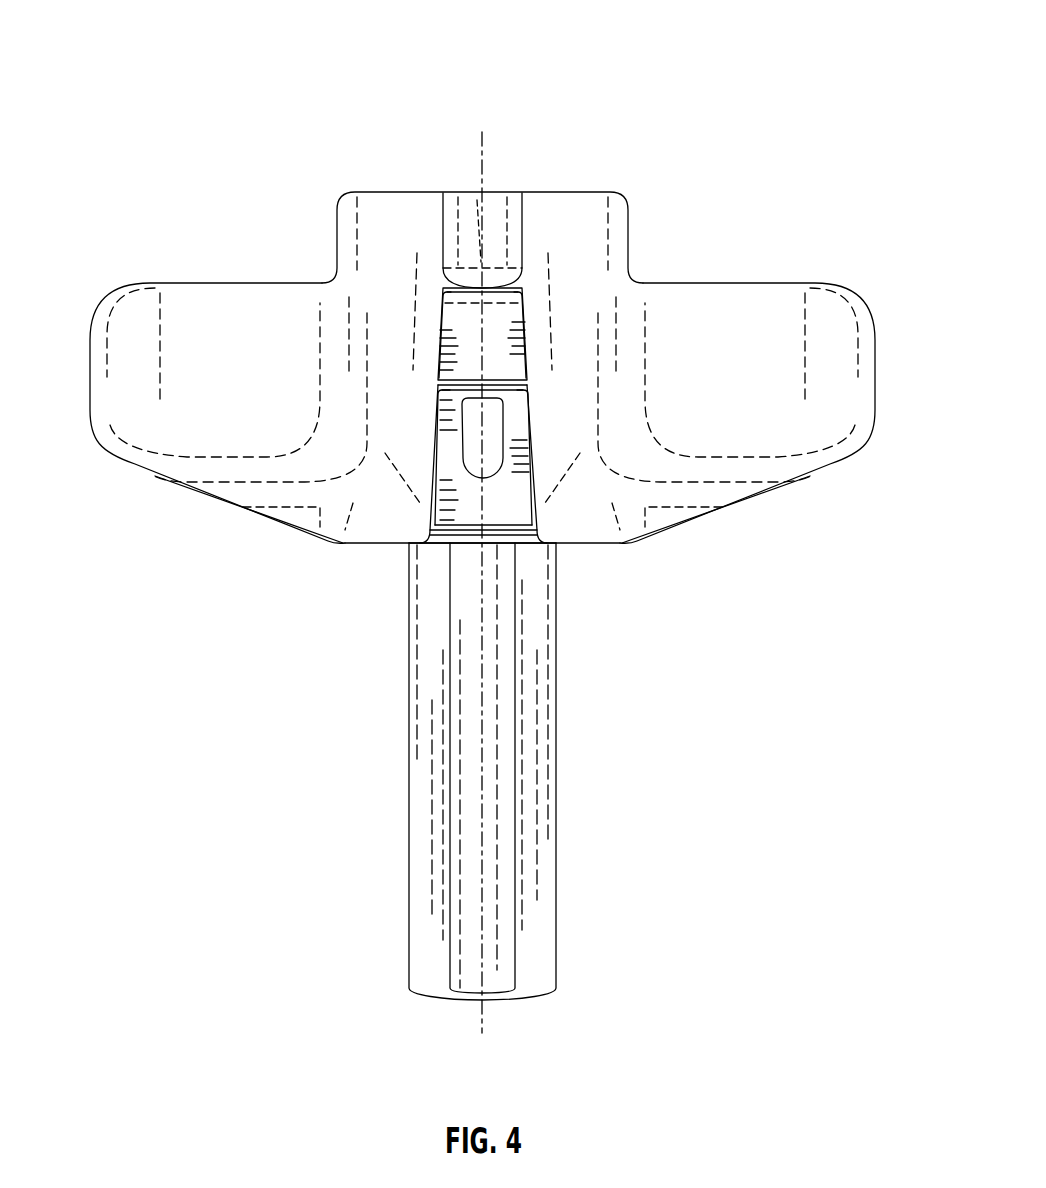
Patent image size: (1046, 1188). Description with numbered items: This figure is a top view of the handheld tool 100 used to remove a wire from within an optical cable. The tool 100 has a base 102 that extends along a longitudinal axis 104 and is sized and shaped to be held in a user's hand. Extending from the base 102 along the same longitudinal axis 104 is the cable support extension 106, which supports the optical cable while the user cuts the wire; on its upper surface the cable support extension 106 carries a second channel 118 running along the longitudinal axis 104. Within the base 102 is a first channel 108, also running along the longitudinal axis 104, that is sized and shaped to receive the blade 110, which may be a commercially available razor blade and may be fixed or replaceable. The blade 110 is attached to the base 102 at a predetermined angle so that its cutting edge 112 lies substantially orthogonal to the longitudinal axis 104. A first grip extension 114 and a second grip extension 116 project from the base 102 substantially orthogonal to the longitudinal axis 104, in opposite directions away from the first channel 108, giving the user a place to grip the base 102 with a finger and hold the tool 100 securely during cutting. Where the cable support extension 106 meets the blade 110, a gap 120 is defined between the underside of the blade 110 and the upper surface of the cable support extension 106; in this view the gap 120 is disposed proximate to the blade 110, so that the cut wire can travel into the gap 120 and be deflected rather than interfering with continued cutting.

The handheld tool 100 is at (783, 194).
The base 102 is at (747, 507).
The longitudinal axis 104 is at (480, 167).
The cable support extension 106 is at (556, 903).
The first channel 108 is at (503, 460).
The blade 110 is at (465, 508).
The cutting edge 112 is at (500, 543).
The first grip extension 114 is at (833, 337).
The second grip extension 116 is at (198, 338).
The second channel 118 is at (465, 852).
The gap 120 is at (460, 545).